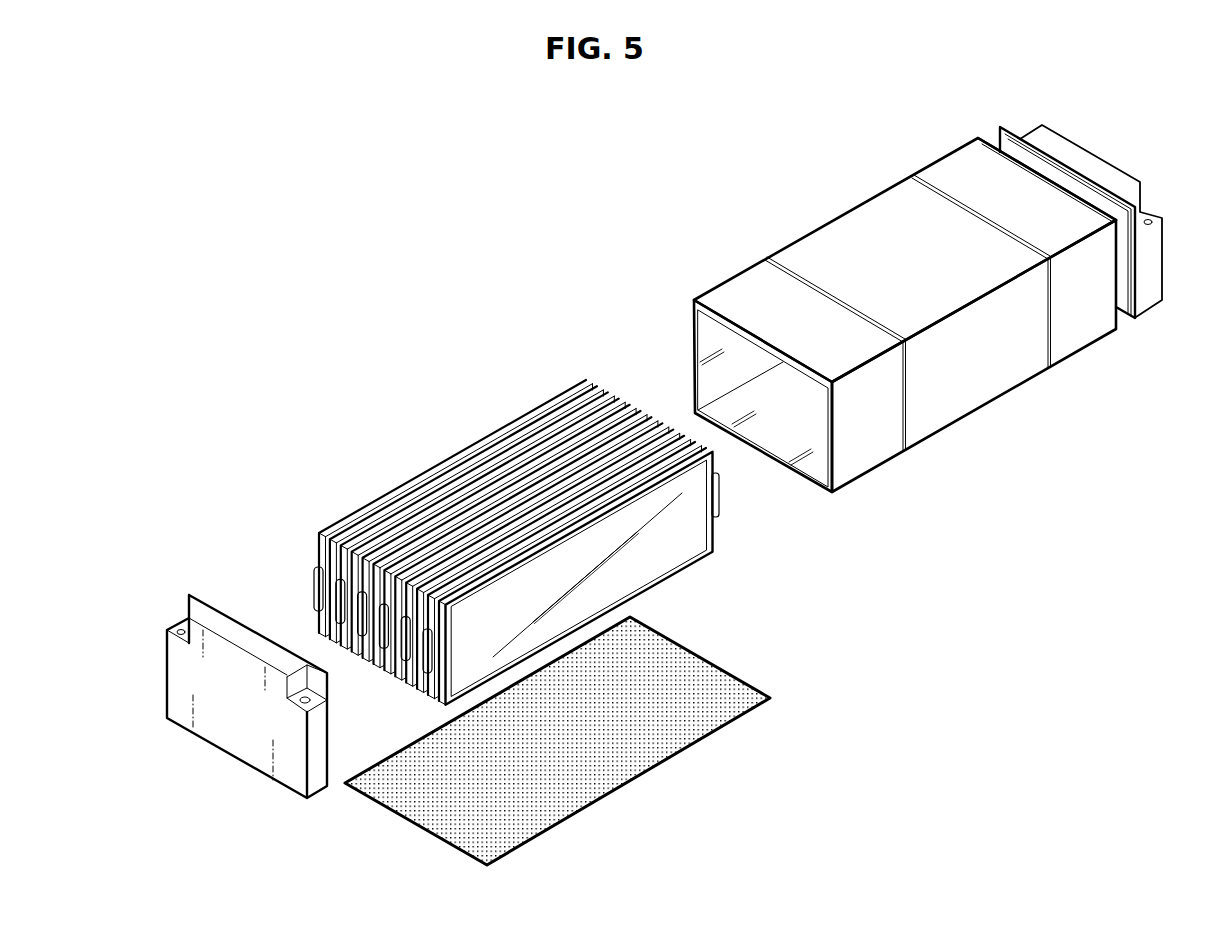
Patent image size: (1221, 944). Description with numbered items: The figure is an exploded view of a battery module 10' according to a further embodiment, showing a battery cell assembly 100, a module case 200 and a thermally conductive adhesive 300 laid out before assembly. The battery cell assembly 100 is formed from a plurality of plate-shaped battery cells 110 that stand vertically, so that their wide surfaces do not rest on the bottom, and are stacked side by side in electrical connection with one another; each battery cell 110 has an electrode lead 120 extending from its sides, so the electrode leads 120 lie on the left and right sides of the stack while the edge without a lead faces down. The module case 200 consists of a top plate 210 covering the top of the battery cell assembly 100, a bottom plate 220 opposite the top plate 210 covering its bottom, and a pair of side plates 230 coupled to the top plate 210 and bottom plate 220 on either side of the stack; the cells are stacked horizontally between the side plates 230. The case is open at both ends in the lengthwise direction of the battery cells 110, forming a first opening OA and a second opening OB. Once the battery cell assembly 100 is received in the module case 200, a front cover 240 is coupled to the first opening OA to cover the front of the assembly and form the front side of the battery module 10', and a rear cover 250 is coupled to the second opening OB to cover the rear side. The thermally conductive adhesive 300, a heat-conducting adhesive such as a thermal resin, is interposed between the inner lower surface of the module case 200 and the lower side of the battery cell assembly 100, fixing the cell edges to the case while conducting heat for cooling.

The battery module 10' is at (670, 474).
The battery cell assembly 100 is at (411, 447).
The battery cell 110 is at (488, 460).
The electrode lead 120 is at (330, 593).
The module case 200 is at (806, 206).
The top plate 210 is at (883, 220).
The bottom plate 220 is at (775, 440).
The side plate 230 is at (983, 390).
The front cover 240 is at (233, 737).
The rear cover 250 is at (1118, 167).
The thermally conductive adhesive 300 is at (700, 675).
The first opening OA is at (707, 340).
The second opening OB is at (990, 136).